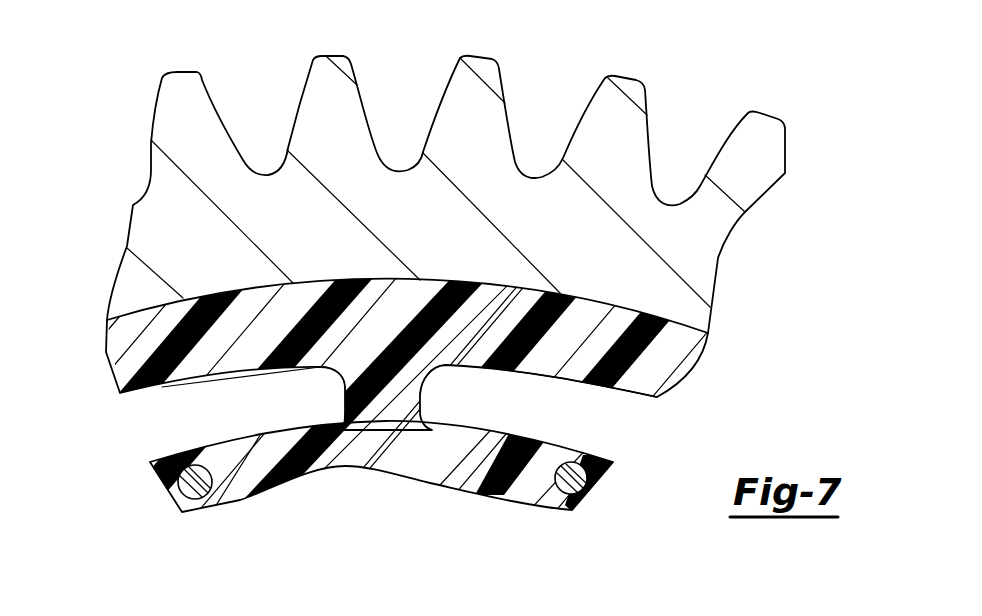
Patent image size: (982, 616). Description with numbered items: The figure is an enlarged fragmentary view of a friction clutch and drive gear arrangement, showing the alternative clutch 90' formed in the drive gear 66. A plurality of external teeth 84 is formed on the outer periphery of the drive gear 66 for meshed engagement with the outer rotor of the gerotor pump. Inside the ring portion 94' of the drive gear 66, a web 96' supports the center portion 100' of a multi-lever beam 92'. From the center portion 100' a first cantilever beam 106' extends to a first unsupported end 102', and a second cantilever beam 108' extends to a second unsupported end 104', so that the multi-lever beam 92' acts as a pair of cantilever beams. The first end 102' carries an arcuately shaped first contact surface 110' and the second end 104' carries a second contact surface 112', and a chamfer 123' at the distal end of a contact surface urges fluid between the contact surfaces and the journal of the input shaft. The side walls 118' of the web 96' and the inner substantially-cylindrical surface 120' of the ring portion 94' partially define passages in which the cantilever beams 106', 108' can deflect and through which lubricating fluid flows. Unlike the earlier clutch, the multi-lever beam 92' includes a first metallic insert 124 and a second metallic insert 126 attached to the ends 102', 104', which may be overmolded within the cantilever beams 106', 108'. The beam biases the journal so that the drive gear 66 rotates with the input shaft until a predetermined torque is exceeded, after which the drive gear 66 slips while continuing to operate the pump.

The drive gear 66 is at (785, 84).
The external teeth 84 is at (178, 78).
The clutch 90' is at (517, 434).
The multi-lever beam 92' is at (381, 475).
The ring portion 94' is at (79, 341).
The web 96' is at (437, 384).
The center portion 100' is at (376, 399).
The first end 102' is at (147, 475).
The second end 104' is at (628, 485).
The first cantilever beam 106' is at (241, 411).
The second cantilever beam 108' is at (551, 404).
The first contact surface 110' is at (236, 505).
The second contact surface 112' is at (547, 515).
The side wall 118' is at (300, 395).
The inner substantially-cylindrical surface 120' is at (347, 363).
The chamfer 123' is at (625, 498).
The first metallic insert 124 is at (200, 496).
The second metallic insert 126 is at (570, 485).